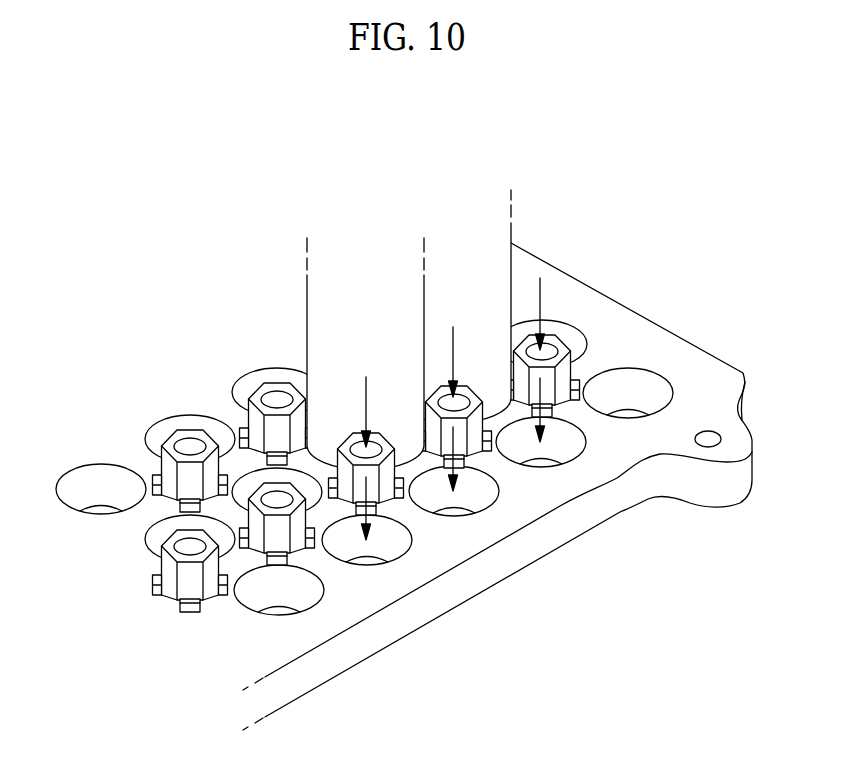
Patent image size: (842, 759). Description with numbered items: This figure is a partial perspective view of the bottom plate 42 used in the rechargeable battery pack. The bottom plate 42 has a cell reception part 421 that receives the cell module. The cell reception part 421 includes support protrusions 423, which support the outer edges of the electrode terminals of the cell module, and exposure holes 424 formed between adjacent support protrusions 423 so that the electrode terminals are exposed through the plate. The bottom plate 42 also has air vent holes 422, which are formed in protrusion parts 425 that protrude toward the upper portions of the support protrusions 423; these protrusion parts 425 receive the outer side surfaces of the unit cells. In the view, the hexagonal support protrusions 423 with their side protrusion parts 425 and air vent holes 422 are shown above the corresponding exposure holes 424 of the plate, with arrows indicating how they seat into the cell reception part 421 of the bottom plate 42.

The bottom plate 42 is at (404, 486).
The cell reception part 421 is at (455, 564).
The air vent hole 422 is at (462, 393).
The support protrusion 423 is at (371, 507).
The exposure hole 424 is at (455, 512).
The protrusion part 425 is at (473, 432).